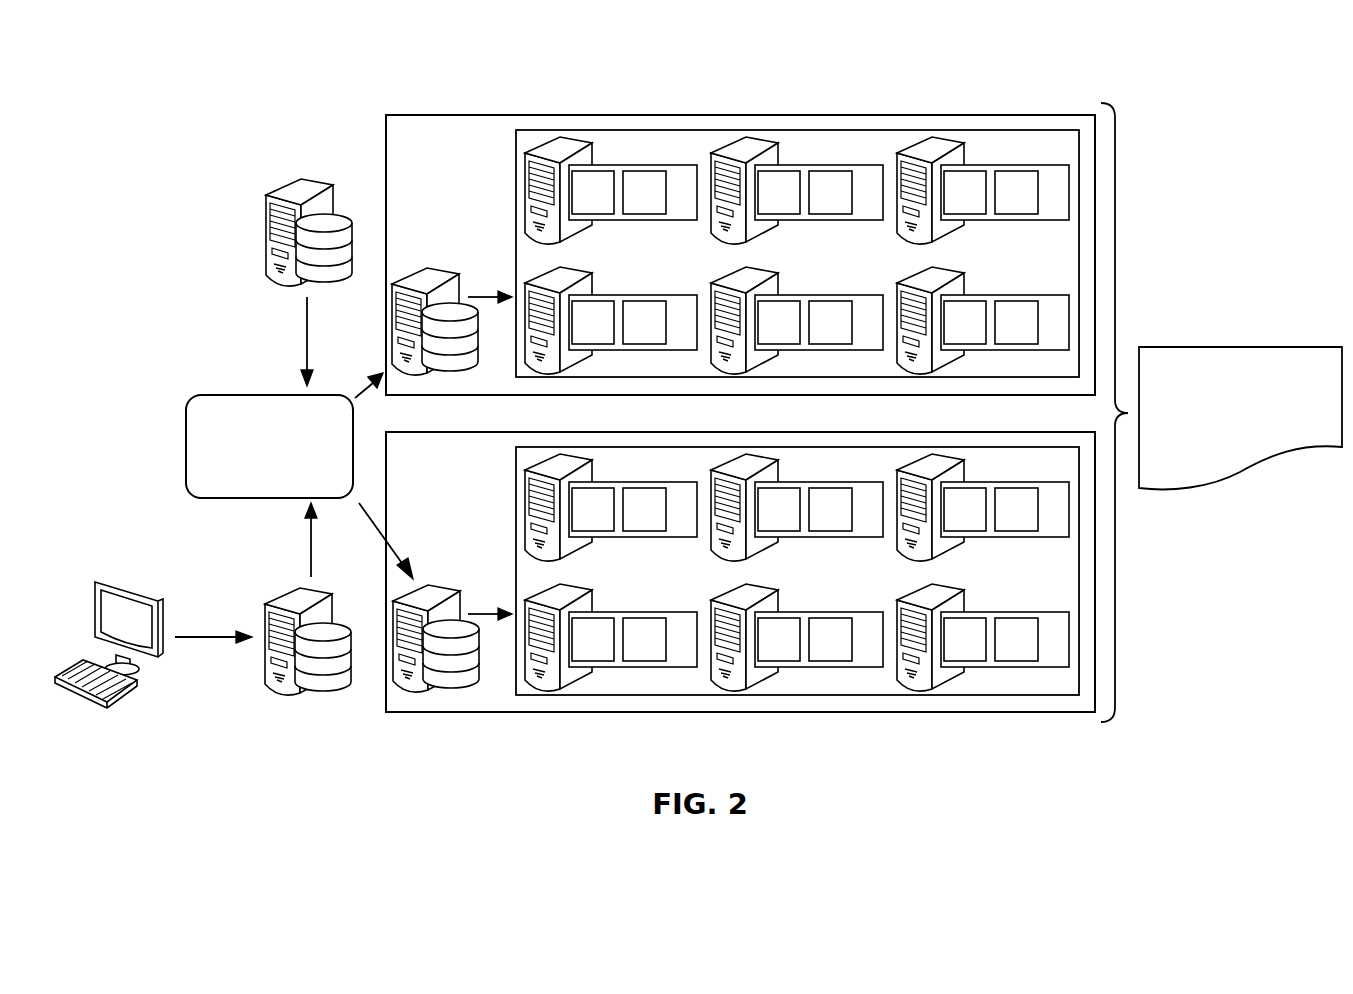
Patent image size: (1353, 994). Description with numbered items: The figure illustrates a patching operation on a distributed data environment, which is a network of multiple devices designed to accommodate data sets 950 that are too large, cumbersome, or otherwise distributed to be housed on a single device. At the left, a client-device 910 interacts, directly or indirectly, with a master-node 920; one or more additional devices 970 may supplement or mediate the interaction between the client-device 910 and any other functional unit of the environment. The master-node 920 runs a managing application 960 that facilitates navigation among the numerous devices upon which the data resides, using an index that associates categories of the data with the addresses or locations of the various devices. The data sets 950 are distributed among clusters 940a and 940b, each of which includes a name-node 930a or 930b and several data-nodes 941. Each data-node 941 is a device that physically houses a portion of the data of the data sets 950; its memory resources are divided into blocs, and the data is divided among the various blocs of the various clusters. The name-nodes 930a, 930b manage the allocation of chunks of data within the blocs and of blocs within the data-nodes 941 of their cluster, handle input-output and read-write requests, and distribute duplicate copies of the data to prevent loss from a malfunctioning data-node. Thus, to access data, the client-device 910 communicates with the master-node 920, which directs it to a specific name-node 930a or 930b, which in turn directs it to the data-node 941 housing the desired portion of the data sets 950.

The client-device 910 is at (130, 586).
The master-node 920 is at (293, 190).
The name-node 930a is at (438, 277).
The name-node 930b is at (430, 594).
The cluster 940a is at (472, 115).
The cluster 940b is at (472, 432).
The data-node 941 is at (922, 150).
The data sets 950 is at (1210, 347).
The managing application 960 is at (270, 395).
The additional device 970 is at (290, 594).